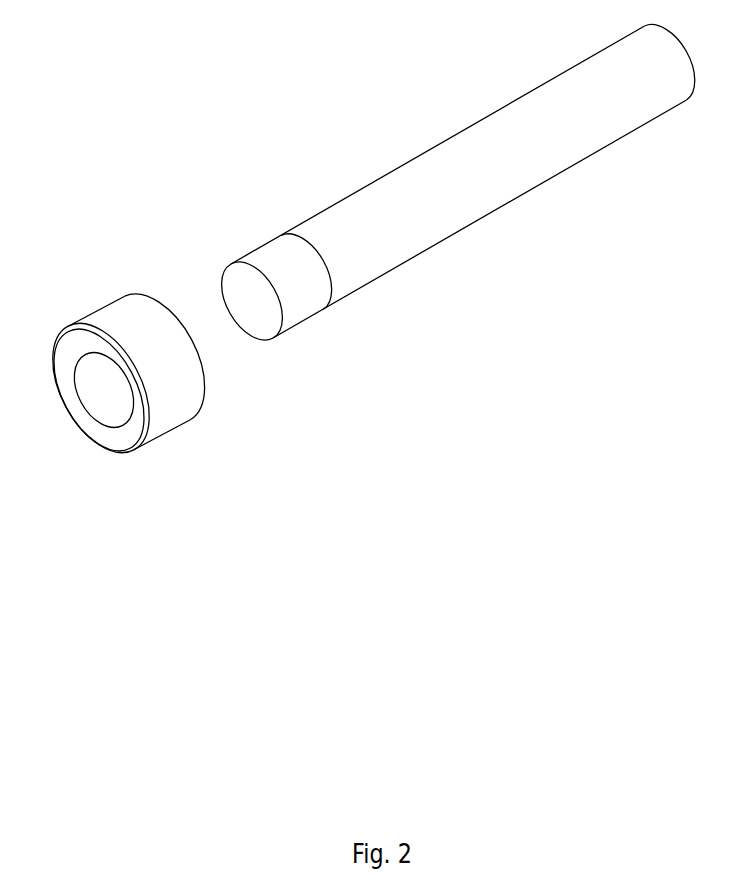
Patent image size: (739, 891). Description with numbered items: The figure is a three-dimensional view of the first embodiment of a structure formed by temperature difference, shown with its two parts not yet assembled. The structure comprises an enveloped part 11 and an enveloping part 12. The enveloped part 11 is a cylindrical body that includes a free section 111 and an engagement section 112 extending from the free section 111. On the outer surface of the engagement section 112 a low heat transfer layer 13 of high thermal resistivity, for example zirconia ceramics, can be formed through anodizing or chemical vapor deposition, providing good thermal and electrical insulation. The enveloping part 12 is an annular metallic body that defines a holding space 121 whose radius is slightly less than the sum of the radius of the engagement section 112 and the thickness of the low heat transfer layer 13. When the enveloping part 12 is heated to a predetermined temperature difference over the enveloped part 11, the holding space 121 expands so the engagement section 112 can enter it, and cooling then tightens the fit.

The enveloped part 11 is at (285, 120).
The free section 111 is at (327, 232).
The engagement section 112 is at (245, 282).
The low heat transfer layer 13 is at (292, 302).
The enveloping part 12 is at (178, 407).
The holding space 121 is at (106, 372).